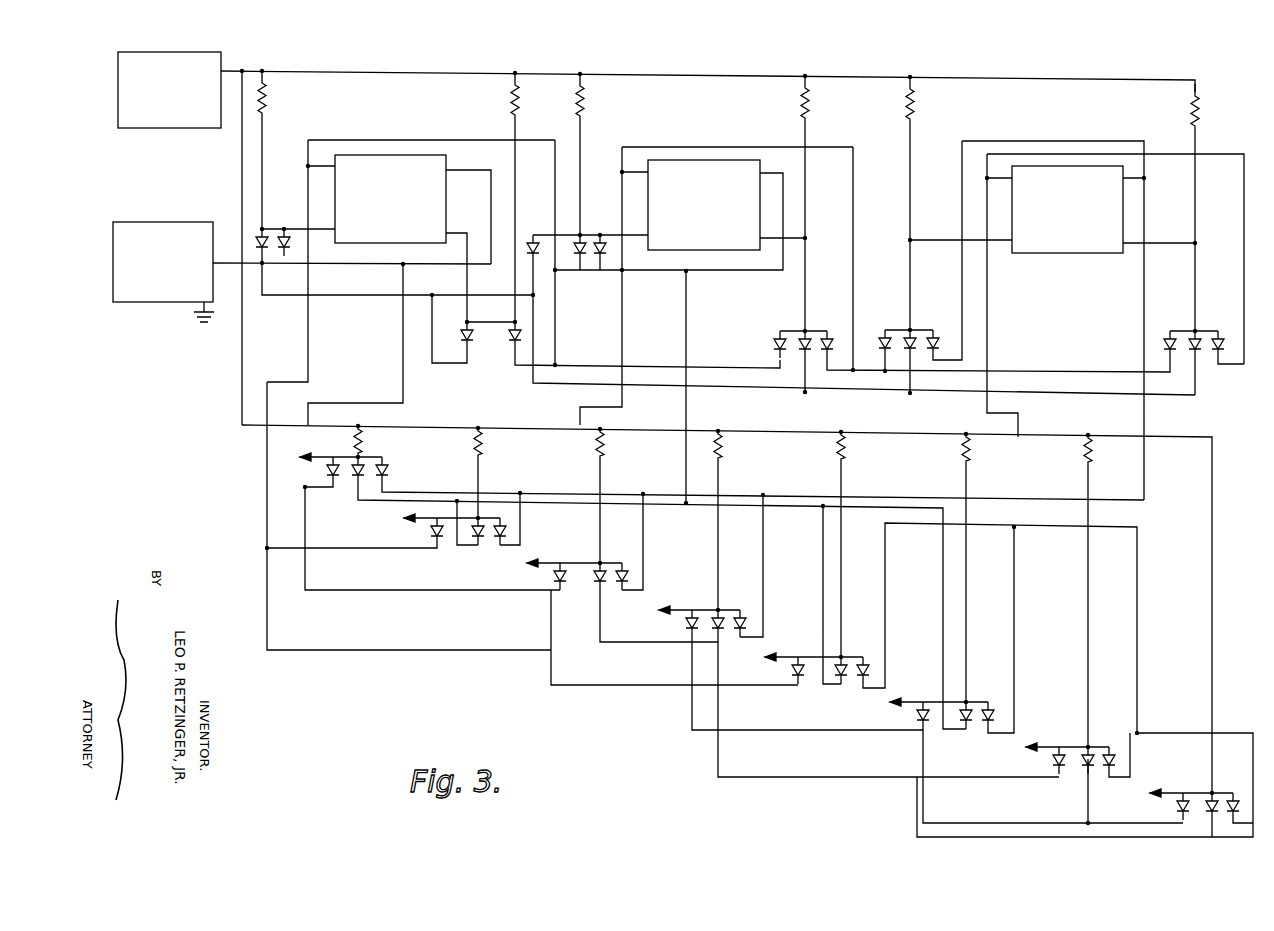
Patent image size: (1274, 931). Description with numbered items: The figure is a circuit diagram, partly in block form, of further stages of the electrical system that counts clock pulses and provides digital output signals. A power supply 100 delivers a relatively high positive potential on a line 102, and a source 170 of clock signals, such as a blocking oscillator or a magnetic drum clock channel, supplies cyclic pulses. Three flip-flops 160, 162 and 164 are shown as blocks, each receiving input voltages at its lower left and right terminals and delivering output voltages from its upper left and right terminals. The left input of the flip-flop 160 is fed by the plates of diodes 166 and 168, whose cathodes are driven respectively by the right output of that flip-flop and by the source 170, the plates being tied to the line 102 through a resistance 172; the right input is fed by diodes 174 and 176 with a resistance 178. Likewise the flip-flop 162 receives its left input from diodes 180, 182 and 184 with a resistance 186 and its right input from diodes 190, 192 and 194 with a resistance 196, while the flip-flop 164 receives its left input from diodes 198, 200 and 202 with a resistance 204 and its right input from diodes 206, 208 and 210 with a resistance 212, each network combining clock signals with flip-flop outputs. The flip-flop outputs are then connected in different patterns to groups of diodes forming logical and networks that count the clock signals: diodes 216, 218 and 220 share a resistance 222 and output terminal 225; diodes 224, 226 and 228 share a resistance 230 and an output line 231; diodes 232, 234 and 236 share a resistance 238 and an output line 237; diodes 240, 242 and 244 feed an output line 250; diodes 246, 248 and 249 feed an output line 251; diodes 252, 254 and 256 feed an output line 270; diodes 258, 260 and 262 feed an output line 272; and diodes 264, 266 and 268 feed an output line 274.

The power supply 100 is at (180, 128).
The line 102 is at (398, 80).
The flip-flop 160 is at (446, 213).
The flip-flop 162 is at (700, 160).
The flip-flop 164 is at (1065, 253).
The diode 166 is at (290, 244).
The diode 168 is at (256, 241).
The source of clock signals 170 is at (150, 302).
The resistance 172 is at (266, 98).
The diode 174 is at (473, 340).
The diode 176 is at (509, 345).
The resistance 178 is at (511, 100).
The diode 180 is at (529, 245).
The diode 182 is at (584, 252).
The diode 184 is at (598, 244).
The resistance 186 is at (584, 100).
The diode 190 is at (773, 342).
The diode 192 is at (800, 340).
The diode 194 is at (840, 328).
The resistance 196 is at (801, 102).
The diode 198 is at (879, 342).
The diode 200 is at (905, 338).
The diode 202 is at (946, 326).
The resistance 204 is at (914, 103).
The diode 206 is at (1164, 346).
The diode 208 is at (1190, 340).
The diode 210 is at (1223, 342).
The resistance 212 is at (1191, 110).
The diode 216 is at (338, 474).
The diode 218 is at (363, 474).
The diode 220 is at (388, 472).
The resistance 222 is at (362, 440).
The diode 224 is at (442, 536).
The output terminal 225 is at (300, 458).
The diode 226 is at (483, 536).
The diode 228 is at (506, 533).
The resistance 230 is at (474, 444).
The output line 231 is at (412, 520).
The diode 232 is at (556, 584).
The diode 234 is at (605, 581).
The diode 236 is at (628, 576).
The output line 237 is at (535, 565).
The resistance 238 is at (604, 446).
The diode 240 is at (688, 632).
The diode 242 is at (714, 620).
The diode 244 is at (745, 622).
The diode 246 is at (803, 666).
The diode 248 is at (846, 676).
The diode 249 is at (868, 668).
The output line 250 is at (664, 612).
The output line 251 is at (772, 659).
The diode 252 is at (918, 722).
The diode 254 is at (971, 720).
The diode 256 is at (993, 712).
The diode 258 is at (1064, 766).
The diode 260 is at (1093, 766).
The diode 262 is at (1115, 762).
The diode 264 is at (1217, 812).
The diode 266 is at (1188, 812).
The diode 268 is at (1238, 804).
The output line 270 is at (898, 704).
The output line 272 is at (1034, 749).
The output line 274 is at (1158, 795).